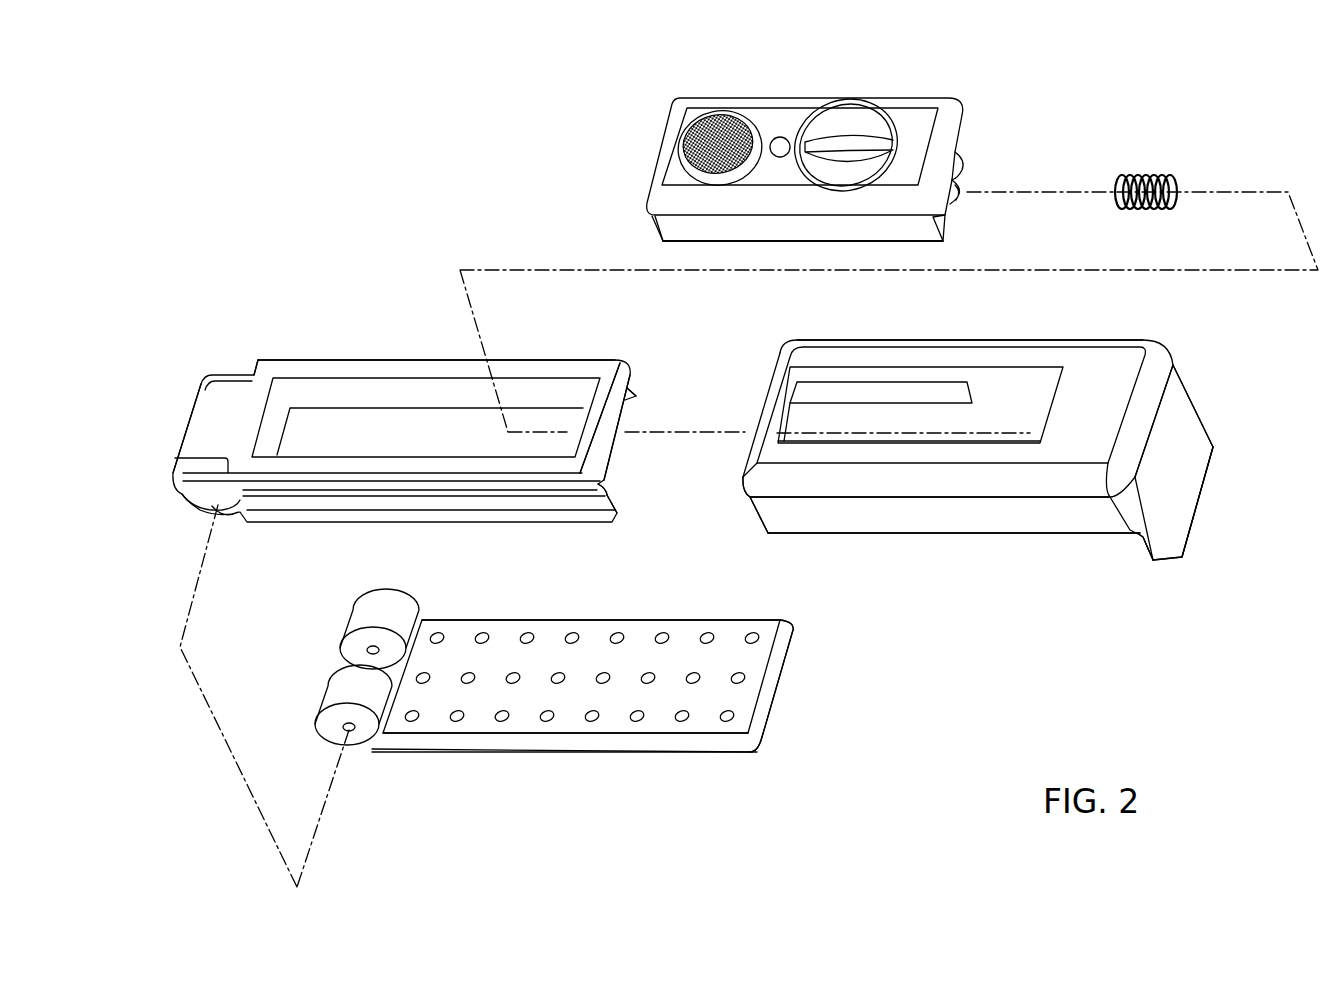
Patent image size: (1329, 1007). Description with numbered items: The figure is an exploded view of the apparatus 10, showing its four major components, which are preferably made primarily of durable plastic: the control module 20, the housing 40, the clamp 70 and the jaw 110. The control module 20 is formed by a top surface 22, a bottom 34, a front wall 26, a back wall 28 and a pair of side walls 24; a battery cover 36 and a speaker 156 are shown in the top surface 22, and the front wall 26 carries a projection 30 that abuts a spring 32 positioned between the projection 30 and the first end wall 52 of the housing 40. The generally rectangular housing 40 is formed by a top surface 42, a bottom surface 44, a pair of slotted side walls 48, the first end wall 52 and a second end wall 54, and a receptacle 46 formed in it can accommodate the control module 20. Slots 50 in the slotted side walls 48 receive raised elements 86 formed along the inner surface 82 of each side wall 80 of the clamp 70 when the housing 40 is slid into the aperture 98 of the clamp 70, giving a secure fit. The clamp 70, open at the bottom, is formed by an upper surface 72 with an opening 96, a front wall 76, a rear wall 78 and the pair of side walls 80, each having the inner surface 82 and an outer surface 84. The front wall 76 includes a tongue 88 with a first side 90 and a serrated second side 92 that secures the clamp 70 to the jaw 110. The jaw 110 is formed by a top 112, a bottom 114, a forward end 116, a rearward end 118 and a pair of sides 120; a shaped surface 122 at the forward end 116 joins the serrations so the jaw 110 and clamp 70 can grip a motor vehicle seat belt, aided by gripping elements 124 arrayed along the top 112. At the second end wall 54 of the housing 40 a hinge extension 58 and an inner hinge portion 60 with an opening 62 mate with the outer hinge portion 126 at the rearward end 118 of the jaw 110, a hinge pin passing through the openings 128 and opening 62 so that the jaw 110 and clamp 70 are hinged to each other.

The apparatus 10 is at (597, 128).
The control module 20 is at (957, 60).
The top surface 22 is at (790, 117).
The side walls 24 is at (678, 235).
The front wall 26 is at (963, 172).
The back wall 28 is at (665, 235).
The projection 30 is at (963, 200).
The spring 32 is at (1156, 176).
The bottom 34 is at (848, 245).
The battery cover 36 is at (848, 120).
The housing 40 is at (225, 334).
The top surface 42 is at (300, 366).
The bottom surface 44 is at (438, 523).
The receptacle 46 is at (337, 427).
The slotted side walls 48 is at (577, 518).
The slots 50 is at (638, 397).
The first end wall 52 is at (637, 417).
The second end wall 54 is at (253, 368).
The hinge extension 58 is at (193, 428).
The inner hinge portion 60 is at (215, 532).
The opening 62 is at (222, 523).
The clamp 70 is at (1186, 590).
The upper surface 72 is at (1113, 345).
The front wall 76 is at (1192, 397).
The rear wall 78 is at (758, 517).
The side walls 80 is at (1055, 537).
The inner surface 82 is at (1023, 397).
The outer surface 84 is at (993, 522).
The raised element 86 is at (882, 397).
The tongue 88 is at (1200, 513).
The first side 90 is at (1187, 463).
The second side 92 is at (1145, 548).
The opening 96 is at (935, 422).
The aperture 98 is at (792, 417).
The jaw 110 is at (790, 790).
The top 112 is at (635, 642).
The bottom 114 is at (555, 752).
The forward end 116 is at (787, 667).
The rearward end 118 is at (343, 655).
The sides 120 is at (470, 747).
The shaped surface 122 is at (763, 727).
The gripping elements 124 is at (724, 722).
The outer hinge portion 126 is at (320, 702).
The openings 128 is at (373, 652).
The speaker 156 is at (705, 117).